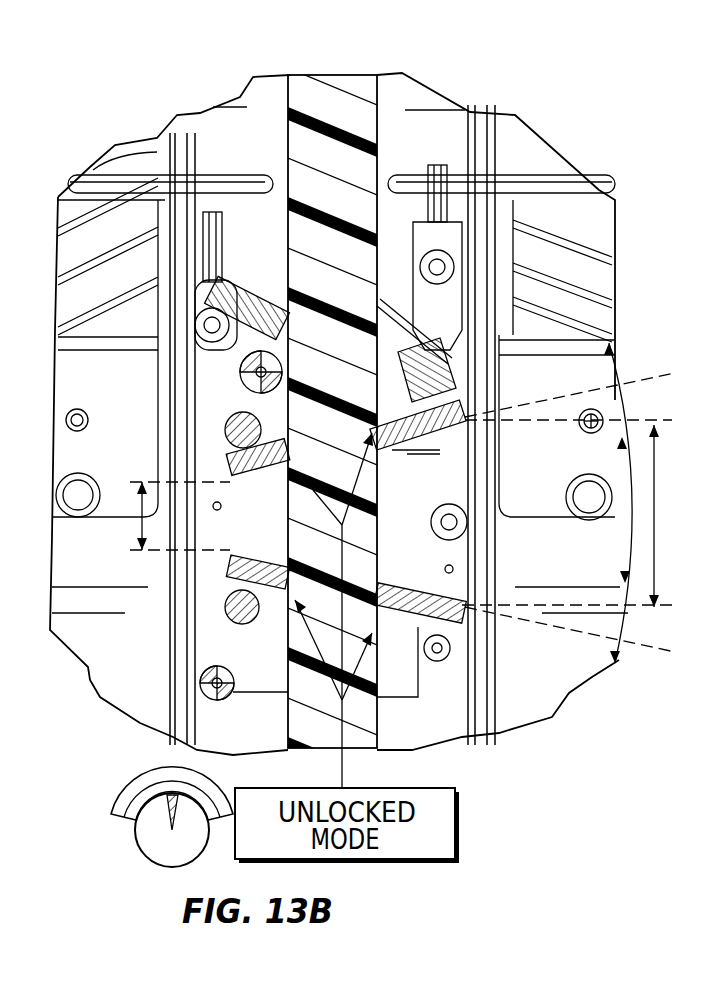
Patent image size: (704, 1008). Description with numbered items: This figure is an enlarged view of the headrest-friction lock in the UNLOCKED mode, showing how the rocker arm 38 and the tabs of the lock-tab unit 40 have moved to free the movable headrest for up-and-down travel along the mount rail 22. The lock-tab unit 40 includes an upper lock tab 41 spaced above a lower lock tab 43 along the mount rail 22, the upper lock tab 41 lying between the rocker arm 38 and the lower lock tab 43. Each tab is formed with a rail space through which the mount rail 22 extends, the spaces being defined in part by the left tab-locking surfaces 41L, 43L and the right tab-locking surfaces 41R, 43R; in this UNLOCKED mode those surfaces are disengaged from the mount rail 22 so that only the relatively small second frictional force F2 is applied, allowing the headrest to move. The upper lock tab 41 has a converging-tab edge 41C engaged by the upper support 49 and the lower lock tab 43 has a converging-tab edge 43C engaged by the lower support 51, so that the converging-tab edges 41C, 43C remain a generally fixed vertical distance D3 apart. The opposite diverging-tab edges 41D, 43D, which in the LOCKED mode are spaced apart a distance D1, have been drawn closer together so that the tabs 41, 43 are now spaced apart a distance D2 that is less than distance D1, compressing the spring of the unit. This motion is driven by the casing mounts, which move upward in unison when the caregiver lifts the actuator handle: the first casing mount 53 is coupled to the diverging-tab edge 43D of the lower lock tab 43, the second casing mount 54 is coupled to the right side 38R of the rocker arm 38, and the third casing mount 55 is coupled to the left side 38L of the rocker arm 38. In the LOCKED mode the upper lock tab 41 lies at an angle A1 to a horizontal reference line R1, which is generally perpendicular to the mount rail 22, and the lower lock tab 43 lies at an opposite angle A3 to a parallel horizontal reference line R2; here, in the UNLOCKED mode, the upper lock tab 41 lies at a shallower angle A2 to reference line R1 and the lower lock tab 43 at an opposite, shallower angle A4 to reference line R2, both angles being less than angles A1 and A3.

The mount rail 22 is at (328, 100).
The rocker arm 38 is at (445, 348).
The left side of rocker arm 38L is at (248, 282).
The right side of rocker arm 38R is at (425, 335).
The lock-tab unit 40 is at (534, 537).
The upper lock tab 41 is at (437, 437).
The converging-tab edge of upper lock tab 41C is at (233, 462).
The diverging-tab edge of upper lock tab 41D is at (462, 403).
The left tab-locking surface of upper lock tab 41L is at (273, 473).
The right tab-locking surface of upper lock tab 41R is at (380, 440).
The lower lock tab 43 is at (443, 590).
The converging-tab edge of lower lock tab 43C is at (227, 577).
The diverging-tab edge of lower lock tab 43D is at (452, 650).
The left tab-locking surface of lower lock tab 43L is at (277, 597).
The right tab-locking surface of lower lock tab 43R is at (382, 583).
The upper support 49 is at (225, 420).
The lower support 51 is at (205, 610).
The first casing mount 53 is at (462, 607).
The second casing mount 54 is at (465, 233).
The third casing mount 55 is at (195, 312).
The angle A1 is at (14, 325).
The angle A2 is at (632, 403).
The angle A3 is at (14, 689).
The angle A4 is at (619, 613).
The distance D1 is at (15, 497).
The distance D2 is at (665, 530).
The distance D3 is at (142, 517).
The horizontal reference line R1 is at (0, 418).
The horizontal reference line R2 is at (0, 603).
The second frictional force F2 is at (130, 803).